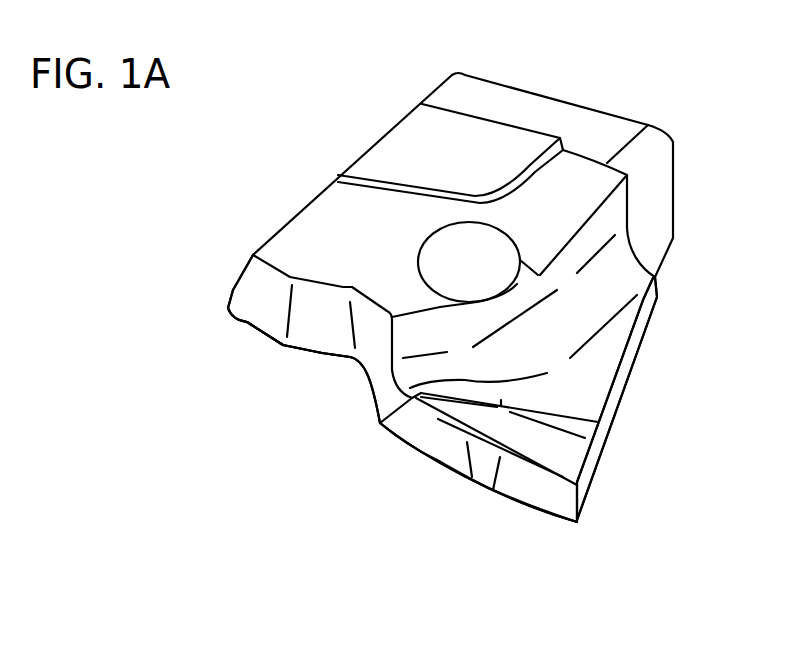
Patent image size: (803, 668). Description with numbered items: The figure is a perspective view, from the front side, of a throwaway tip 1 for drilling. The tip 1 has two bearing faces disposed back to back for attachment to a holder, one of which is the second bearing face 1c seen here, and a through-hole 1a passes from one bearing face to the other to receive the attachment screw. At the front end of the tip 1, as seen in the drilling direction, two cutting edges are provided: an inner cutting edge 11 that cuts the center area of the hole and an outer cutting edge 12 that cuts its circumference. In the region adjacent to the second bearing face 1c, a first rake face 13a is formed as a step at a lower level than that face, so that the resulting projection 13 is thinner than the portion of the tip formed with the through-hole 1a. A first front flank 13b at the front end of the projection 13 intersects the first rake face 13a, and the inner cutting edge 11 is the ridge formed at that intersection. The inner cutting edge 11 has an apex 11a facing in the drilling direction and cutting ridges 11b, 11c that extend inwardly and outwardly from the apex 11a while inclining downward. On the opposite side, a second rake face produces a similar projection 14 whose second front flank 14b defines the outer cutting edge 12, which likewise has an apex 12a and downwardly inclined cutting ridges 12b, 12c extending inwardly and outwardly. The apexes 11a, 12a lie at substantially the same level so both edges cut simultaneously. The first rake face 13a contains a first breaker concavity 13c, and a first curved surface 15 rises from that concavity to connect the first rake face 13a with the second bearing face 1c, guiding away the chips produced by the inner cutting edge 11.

The throwaway tip 1 is at (343, 78).
The through-hole 1a is at (458, 248).
The second bearing face 1c is at (562, 178).
The projection 14 is at (271, 212).
The second front flank 14b is at (257, 288).
The outer cutting edge 12 is at (358, 465).
The apex 12a is at (285, 343).
The cutting ridge 12b is at (322, 353).
The cutting ridge 12c is at (252, 330).
The inner cutting edge 11 is at (497, 595).
The apex 11a is at (460, 440).
The cutting ridge 11b is at (417, 444).
The cutting ridge 11c is at (505, 455).
The projection 13 is at (670, 350).
The first rake face 13a is at (580, 408).
The first front flank 13b is at (538, 497).
The first breaker concavity 13c is at (570, 453).
The first curved surface 15 is at (522, 353).